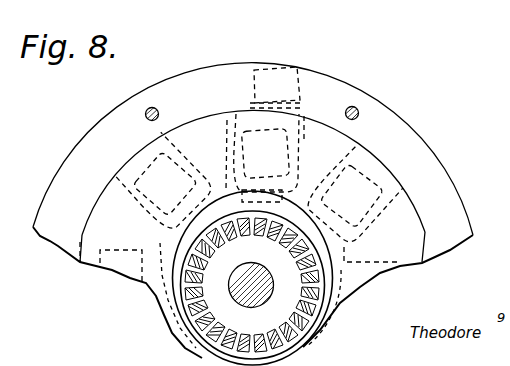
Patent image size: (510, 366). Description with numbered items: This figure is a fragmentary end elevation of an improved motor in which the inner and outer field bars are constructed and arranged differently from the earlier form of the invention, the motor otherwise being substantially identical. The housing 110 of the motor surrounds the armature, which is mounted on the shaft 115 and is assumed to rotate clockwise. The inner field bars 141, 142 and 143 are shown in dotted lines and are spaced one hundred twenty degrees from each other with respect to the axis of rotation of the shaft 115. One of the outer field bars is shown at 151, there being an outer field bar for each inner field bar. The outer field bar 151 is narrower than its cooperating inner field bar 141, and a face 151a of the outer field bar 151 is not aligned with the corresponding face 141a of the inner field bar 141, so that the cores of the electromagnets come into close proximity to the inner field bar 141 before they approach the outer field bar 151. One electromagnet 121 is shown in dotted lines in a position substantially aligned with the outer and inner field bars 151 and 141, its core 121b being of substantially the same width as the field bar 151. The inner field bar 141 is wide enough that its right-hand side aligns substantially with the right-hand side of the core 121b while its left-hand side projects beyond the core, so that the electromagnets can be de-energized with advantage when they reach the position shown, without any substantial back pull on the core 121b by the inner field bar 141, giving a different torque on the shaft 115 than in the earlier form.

The housing 110 is at (377, 107).
The shaft 115 is at (262, 290).
The electromagnet 121 is at (298, 120).
The core 121b is at (236, 118).
The inner field bar 141 is at (251, 202).
The face of the inner field bar 141a is at (225, 163).
The inner field bar 142 is at (172, 300).
The inner field bar 143 is at (300, 300).
The outer field bar 151 is at (283, 82).
The face of the outer field bar 151a is at (254, 70).